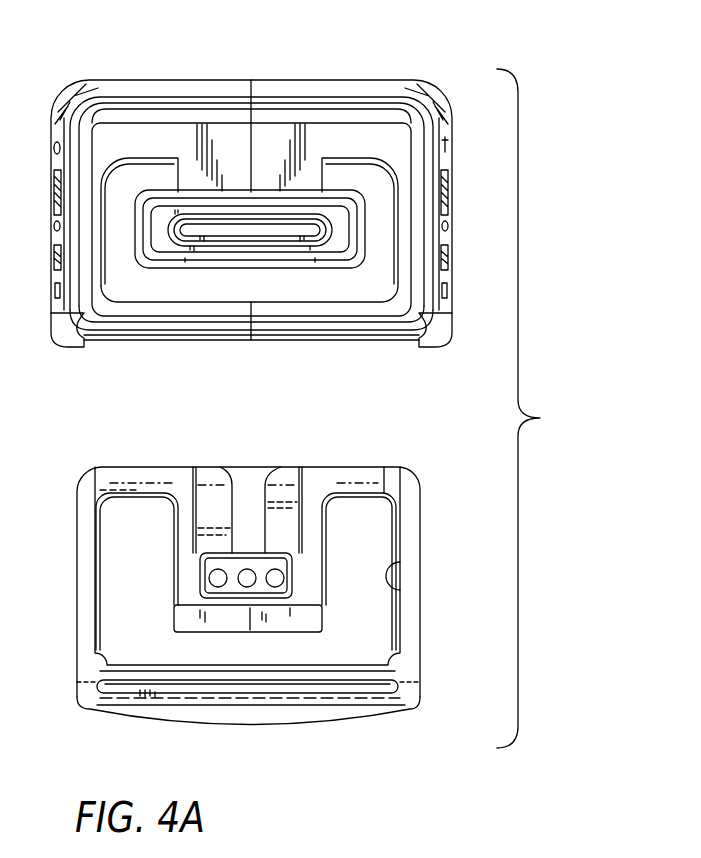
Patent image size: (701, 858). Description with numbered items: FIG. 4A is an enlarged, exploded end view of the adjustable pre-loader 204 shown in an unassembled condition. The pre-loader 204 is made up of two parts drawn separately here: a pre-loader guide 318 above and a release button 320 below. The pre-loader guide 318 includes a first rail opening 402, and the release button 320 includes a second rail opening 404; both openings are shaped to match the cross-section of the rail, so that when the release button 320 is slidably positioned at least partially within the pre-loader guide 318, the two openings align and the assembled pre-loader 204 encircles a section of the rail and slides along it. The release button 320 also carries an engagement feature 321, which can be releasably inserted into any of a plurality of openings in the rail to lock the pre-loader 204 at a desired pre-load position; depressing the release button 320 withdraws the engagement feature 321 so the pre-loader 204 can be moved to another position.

The adjustable pre-loader 204 is at (542, 408).
The pre-loader guide 318 is at (392, 81).
The release button 320 is at (424, 498).
The engagement feature 321 is at (245, 632).
The first rail opening 402 is at (350, 283).
The second rail opening 404 is at (400, 562).